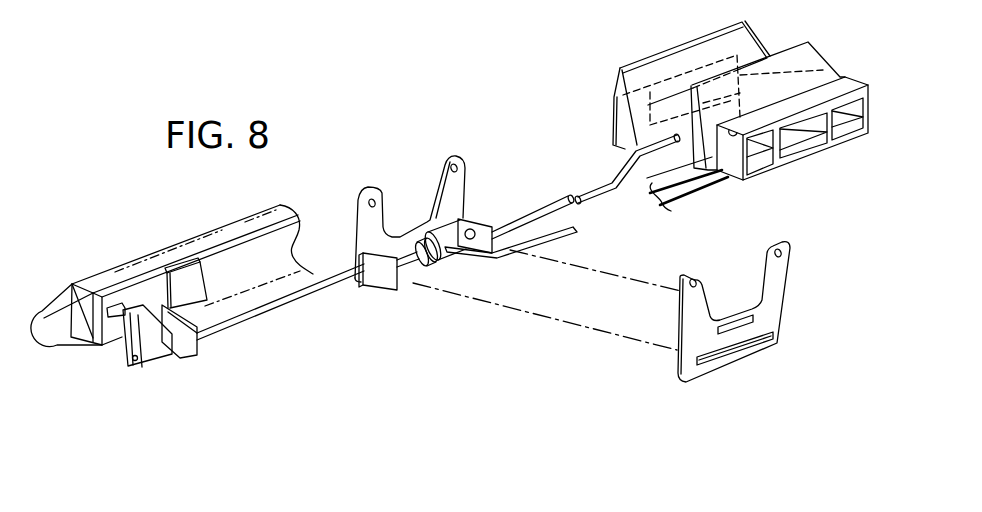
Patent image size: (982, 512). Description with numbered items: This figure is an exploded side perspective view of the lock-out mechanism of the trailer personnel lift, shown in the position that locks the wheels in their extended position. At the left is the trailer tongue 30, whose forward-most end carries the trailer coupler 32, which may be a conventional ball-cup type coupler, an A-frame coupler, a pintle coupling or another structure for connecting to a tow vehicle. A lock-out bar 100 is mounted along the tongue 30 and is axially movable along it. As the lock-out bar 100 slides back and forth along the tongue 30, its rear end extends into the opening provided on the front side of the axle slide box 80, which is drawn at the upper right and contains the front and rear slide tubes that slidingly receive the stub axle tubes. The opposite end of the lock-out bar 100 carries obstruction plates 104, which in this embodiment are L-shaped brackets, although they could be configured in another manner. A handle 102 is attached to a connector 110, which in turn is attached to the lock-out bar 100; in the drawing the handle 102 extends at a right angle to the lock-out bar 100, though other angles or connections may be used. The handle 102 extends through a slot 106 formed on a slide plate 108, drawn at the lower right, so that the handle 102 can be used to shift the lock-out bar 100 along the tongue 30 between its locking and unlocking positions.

The trailer tongue 30 is at (230, 267).
The trailer coupler 32 is at (87, 317).
The axle slide box 80 is at (845, 80).
The lock-out bar 100 is at (306, 300).
The handle 102 is at (578, 230).
The obstruction plates 104 is at (123, 345).
The slot 106 is at (745, 350).
The slide plate 108 is at (773, 300).
The connector 110 is at (432, 222).